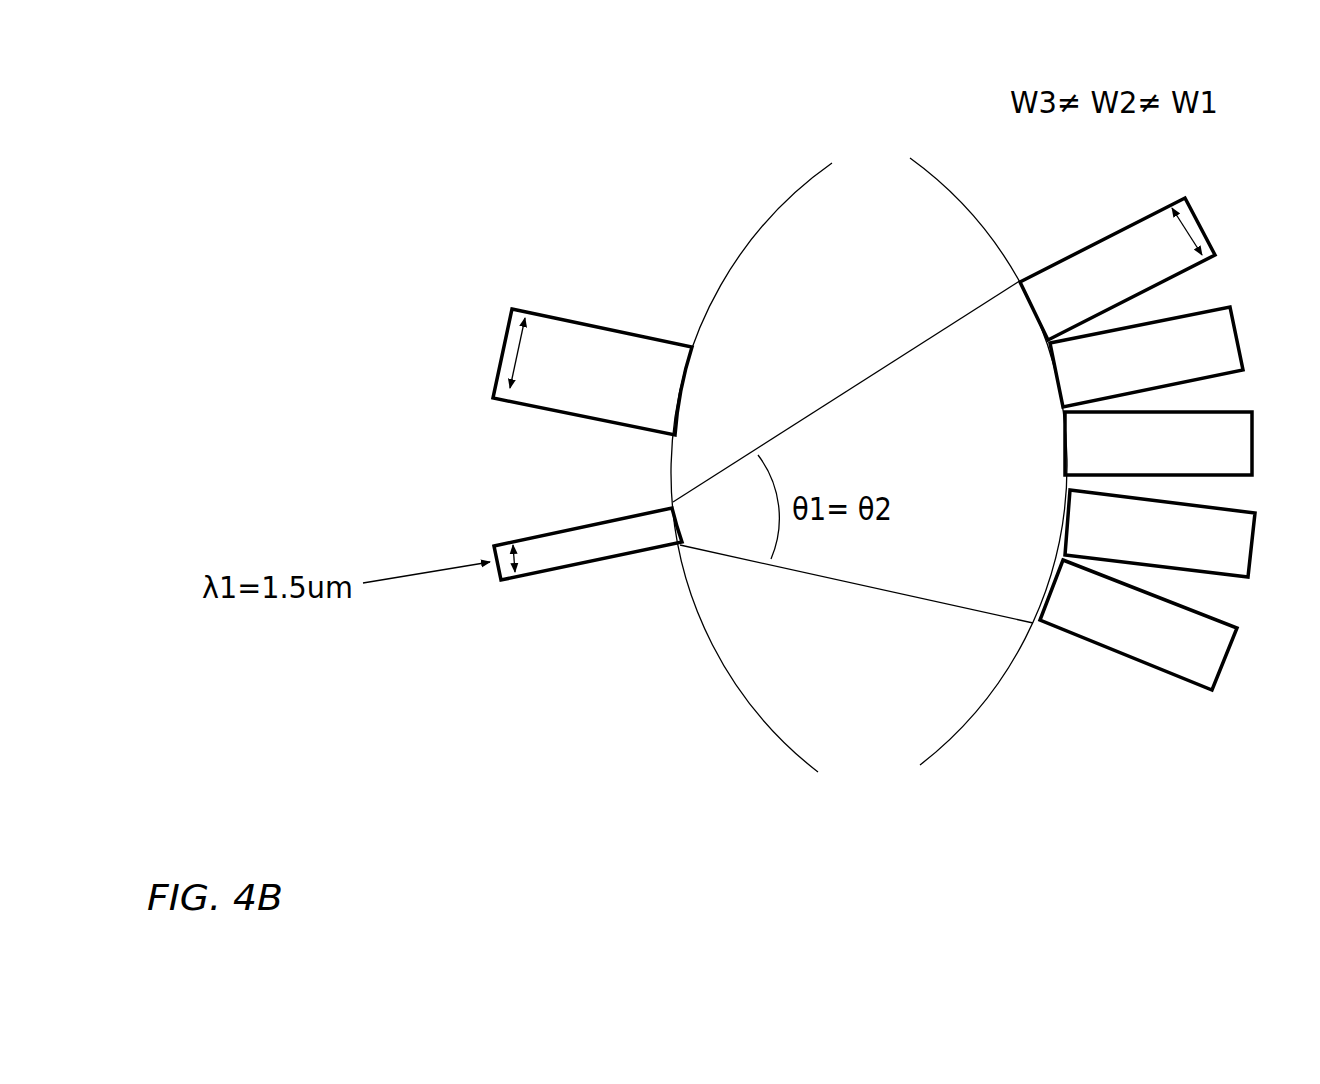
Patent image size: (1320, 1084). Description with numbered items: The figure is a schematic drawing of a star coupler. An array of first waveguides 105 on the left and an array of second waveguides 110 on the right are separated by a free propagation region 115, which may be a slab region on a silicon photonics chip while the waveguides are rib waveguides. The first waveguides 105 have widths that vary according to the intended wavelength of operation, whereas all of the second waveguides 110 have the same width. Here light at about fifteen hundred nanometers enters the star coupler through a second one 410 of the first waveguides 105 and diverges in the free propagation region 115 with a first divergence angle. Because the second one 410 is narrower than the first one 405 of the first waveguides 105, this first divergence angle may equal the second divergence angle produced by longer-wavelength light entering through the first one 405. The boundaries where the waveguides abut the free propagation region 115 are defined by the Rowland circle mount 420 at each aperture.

The first waveguides 105 is at (590, 563).
The second waveguides 110 is at (1253, 812).
The free propagation region 115 is at (869, 527).
The first one of the first waveguides 405 is at (615, 328).
The second one of the first waveguides 410 is at (583, 562).
The Rowland circle mount 420 is at (767, 221).